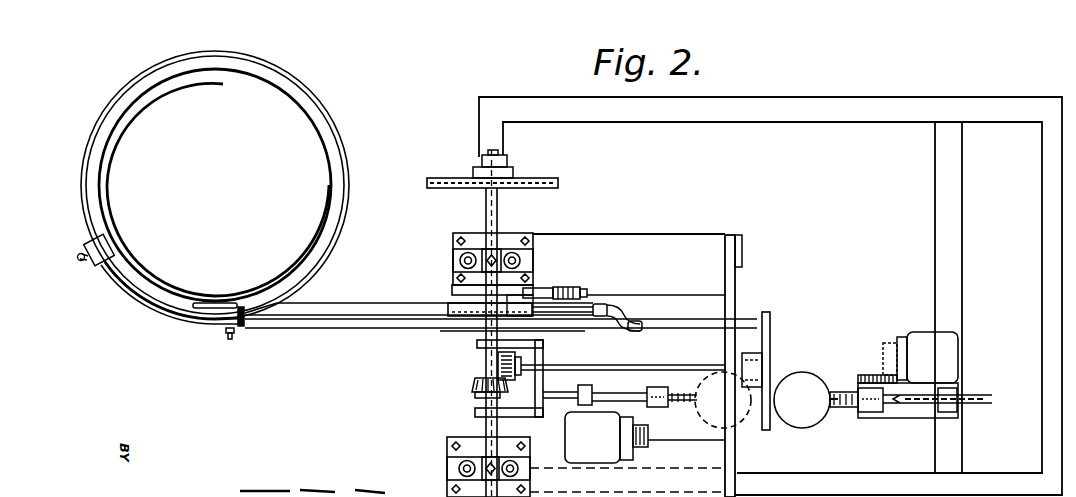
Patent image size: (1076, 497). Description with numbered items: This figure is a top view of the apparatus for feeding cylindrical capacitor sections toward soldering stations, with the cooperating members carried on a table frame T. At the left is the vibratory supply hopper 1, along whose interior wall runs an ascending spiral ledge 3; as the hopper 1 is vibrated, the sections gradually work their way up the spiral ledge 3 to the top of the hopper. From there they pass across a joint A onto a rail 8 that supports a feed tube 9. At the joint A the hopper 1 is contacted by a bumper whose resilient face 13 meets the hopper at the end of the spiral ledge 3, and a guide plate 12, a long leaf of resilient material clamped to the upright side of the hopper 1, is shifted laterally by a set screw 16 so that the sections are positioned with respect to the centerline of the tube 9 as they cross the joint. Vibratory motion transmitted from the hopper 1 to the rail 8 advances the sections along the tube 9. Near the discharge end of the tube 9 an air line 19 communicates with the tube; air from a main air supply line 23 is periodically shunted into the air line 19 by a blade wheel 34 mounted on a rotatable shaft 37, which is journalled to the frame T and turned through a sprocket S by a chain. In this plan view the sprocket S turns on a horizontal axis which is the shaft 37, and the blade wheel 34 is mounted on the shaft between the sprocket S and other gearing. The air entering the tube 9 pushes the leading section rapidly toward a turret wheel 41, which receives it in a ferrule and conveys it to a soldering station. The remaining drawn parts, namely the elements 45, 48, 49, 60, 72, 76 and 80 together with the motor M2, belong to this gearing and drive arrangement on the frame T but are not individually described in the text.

The vibratory supply hopper 1 is at (112, 283).
The ascending spiral ledge 3 is at (122, 118).
The rail 8 is at (352, 322).
The feed tube 9 is at (319, 327).
The guide plate 12 is at (170, 312).
The resilient face 13 is at (241, 327).
The set screw 16 is at (229, 339).
The air line 19 is at (662, 324).
The main air supply line 23 is at (545, 291).
The blade wheel 34 is at (455, 305).
The rotatable shaft 37 is at (498, 206).
The turret wheel 41 is at (771, 335).
The shaft 45 is at (673, 362).
The bevel gear 48 is at (497, 363).
The bevel gear 49 is at (473, 382).
The roller 60 is at (737, 421).
The coupling 72 is at (688, 406).
The block 76 is at (877, 414).
The shaft 80 is at (556, 401).
The joint A is at (219, 287).
The table frame T is at (479, 136).
The sprocket S is at (538, 181).
The motor M2 is at (761, 397).